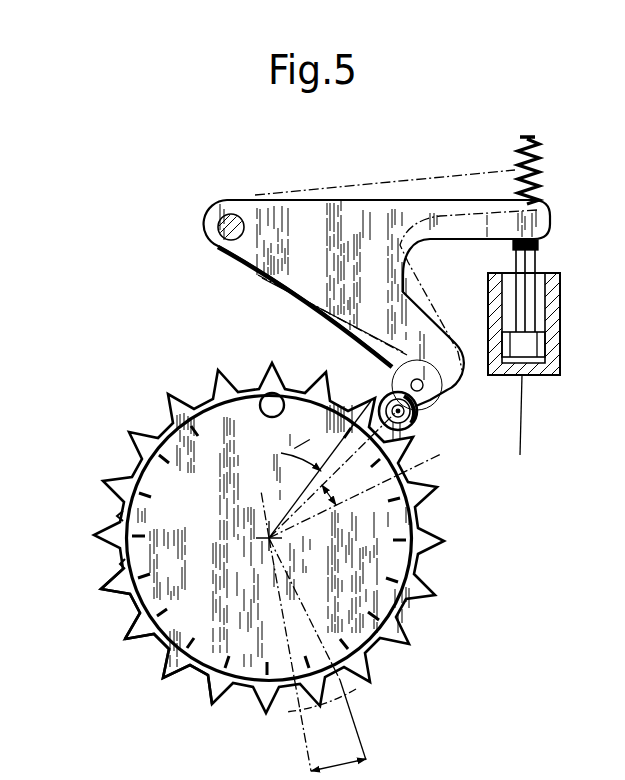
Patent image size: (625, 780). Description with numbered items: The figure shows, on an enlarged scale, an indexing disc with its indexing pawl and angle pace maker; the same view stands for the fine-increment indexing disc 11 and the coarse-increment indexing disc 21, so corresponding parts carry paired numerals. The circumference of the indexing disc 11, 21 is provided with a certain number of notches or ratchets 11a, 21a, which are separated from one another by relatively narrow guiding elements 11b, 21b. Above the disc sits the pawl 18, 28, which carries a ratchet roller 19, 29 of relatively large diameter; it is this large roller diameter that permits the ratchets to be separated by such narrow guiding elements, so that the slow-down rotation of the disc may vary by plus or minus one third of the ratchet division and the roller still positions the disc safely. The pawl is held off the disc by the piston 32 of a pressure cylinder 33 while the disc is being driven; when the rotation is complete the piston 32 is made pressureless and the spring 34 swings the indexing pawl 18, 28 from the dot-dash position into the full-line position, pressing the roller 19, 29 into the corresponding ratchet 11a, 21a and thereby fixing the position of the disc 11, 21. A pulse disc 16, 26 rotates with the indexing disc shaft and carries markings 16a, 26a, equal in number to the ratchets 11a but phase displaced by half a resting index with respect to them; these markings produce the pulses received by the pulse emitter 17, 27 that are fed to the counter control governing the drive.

The indexing disc 11 is at (269, 567).
The indexing disc 21 is at (145, 419).
The notches 11a is at (150, 669).
The notches 21a is at (195, 674).
The guiding elements 11b is at (84, 604).
The guiding members 21b is at (137, 623).
The pulse disc 16 is at (92, 565).
The pulse disc 26 is at (144, 555).
The markings 16a is at (81, 508).
The notch (second embodiment) 26a is at (142, 535).
The pulse emitter 17 is at (257, 374).
The stop pin (second embodiment) 27 is at (267, 394).
The pawl 18 is at (377, 276).
The pawl 28 is at (275, 210).
The roller 19 is at (438, 398).
The latching roller 29 is at (417, 428).
The piston 32 is at (538, 255).
The pressure cylinder 33 is at (553, 326).
The spring 34 is at (539, 152).